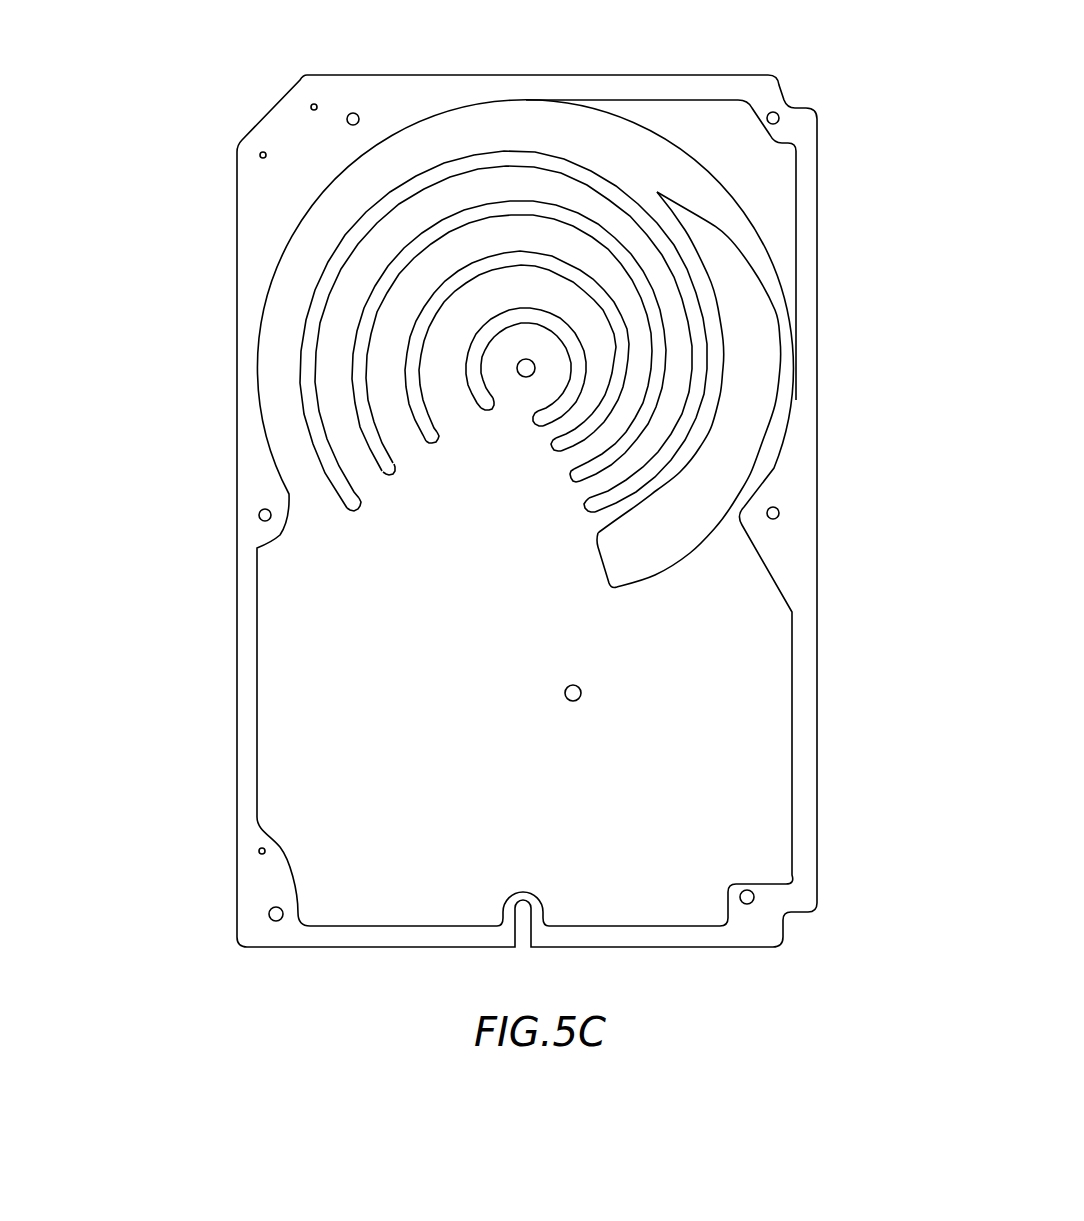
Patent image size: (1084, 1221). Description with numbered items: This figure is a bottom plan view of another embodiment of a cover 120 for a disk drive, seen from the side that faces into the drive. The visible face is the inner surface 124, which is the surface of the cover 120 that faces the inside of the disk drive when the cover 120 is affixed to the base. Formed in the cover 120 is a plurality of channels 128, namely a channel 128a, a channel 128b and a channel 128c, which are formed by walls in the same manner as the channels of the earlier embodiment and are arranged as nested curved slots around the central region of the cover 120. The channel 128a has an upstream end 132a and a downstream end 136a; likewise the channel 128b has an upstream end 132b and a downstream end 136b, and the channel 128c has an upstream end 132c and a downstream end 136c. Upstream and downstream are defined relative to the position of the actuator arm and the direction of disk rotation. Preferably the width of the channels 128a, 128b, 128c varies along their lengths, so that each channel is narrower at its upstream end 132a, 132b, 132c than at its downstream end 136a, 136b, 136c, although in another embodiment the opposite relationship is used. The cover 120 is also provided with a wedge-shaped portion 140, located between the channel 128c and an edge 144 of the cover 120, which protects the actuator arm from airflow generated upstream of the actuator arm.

The cover 120 is at (212, 712).
The inner surface 124 is at (752, 640).
The channels 128 is at (290, 362).
The channel 128a is at (530, 290).
The channel 128b is at (623, 307).
The channel 128c is at (683, 330).
The upstream end 132a is at (552, 433).
The upstream end 132b is at (577, 458).
The upstream end 132c is at (593, 488).
The downstream end 136a is at (452, 413).
The downstream end 136b is at (405, 445).
The downstream end 136c is at (363, 475).
The wedge-shaped portion 140 is at (765, 437).
The edge 144 is at (820, 372).